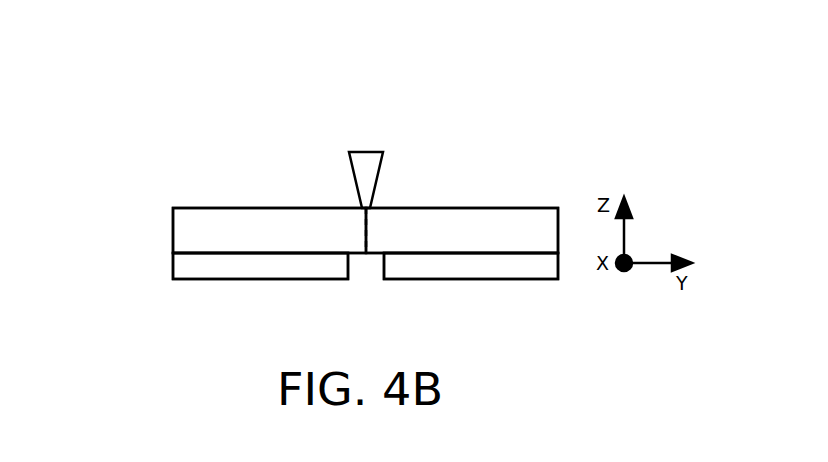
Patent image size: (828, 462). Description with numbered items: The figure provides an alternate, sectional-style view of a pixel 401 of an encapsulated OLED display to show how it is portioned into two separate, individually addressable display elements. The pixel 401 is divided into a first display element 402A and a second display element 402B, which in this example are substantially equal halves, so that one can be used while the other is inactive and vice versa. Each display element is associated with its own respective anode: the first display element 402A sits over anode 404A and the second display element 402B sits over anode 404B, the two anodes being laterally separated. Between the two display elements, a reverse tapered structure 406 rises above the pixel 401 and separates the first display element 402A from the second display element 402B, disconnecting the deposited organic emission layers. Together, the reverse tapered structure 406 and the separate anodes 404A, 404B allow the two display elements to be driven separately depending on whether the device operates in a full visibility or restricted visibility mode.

The pixel 401 is at (192, 115).
The first display element 402A is at (470, 208).
The second display element 402B is at (227, 208).
The anode 404A is at (465, 280).
The anode 404B is at (237, 280).
The reverse tapered structure 406 is at (357, 152).